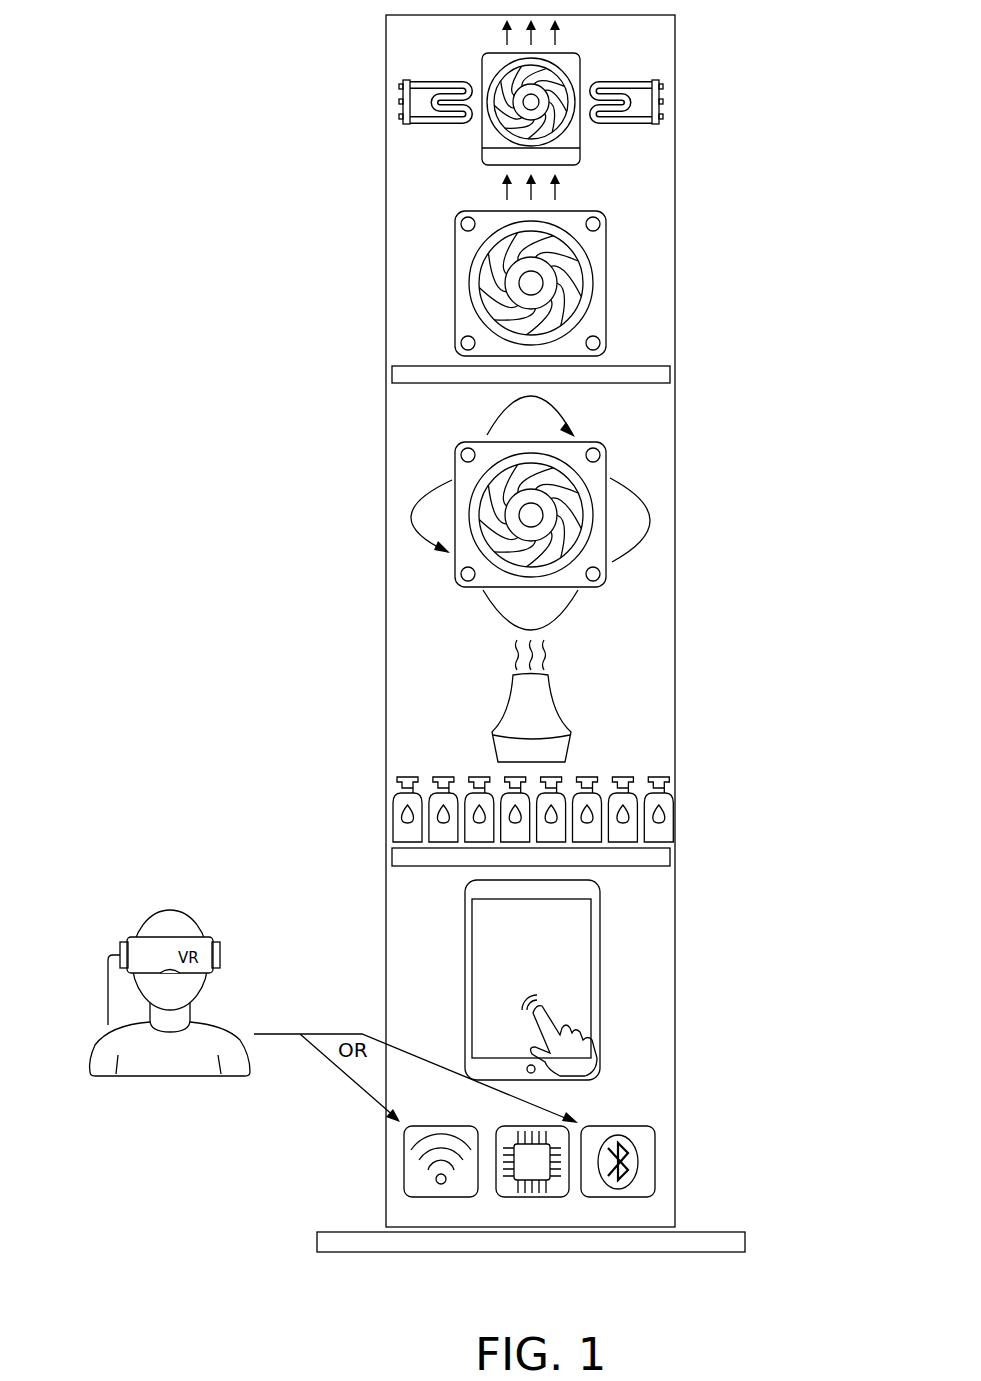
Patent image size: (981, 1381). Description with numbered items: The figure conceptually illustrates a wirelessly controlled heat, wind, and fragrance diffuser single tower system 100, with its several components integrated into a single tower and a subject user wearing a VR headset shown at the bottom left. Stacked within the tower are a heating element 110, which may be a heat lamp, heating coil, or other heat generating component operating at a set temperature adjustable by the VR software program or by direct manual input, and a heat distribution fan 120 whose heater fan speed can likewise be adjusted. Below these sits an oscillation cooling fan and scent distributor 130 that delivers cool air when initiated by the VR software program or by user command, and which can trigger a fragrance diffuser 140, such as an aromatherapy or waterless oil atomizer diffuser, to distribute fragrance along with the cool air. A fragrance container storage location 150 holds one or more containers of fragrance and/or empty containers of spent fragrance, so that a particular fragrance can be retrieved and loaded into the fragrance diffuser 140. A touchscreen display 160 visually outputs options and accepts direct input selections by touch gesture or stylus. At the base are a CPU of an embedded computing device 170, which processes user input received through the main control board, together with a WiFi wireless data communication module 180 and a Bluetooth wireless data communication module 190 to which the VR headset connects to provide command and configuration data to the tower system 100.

The wirelessly controlled heat, wind, and fragrance diffuser single tower system 100 is at (210, 70).
The heating element 110 is at (658, 82).
The heat distribution fan 120 is at (600, 240).
The oscillation cooling fan and scent distributor 130 is at (600, 478).
The fragrance diffuser 140 is at (555, 718).
The fragrance container storage location 150 is at (663, 792).
The touchscreen display 160 is at (575, 948).
The CPU of an embedded computing device 170 is at (562, 1188).
The WiFi wireless data communication module 180 is at (411, 1186).
The Bluetooth wireless data communication module 190 is at (645, 1140).